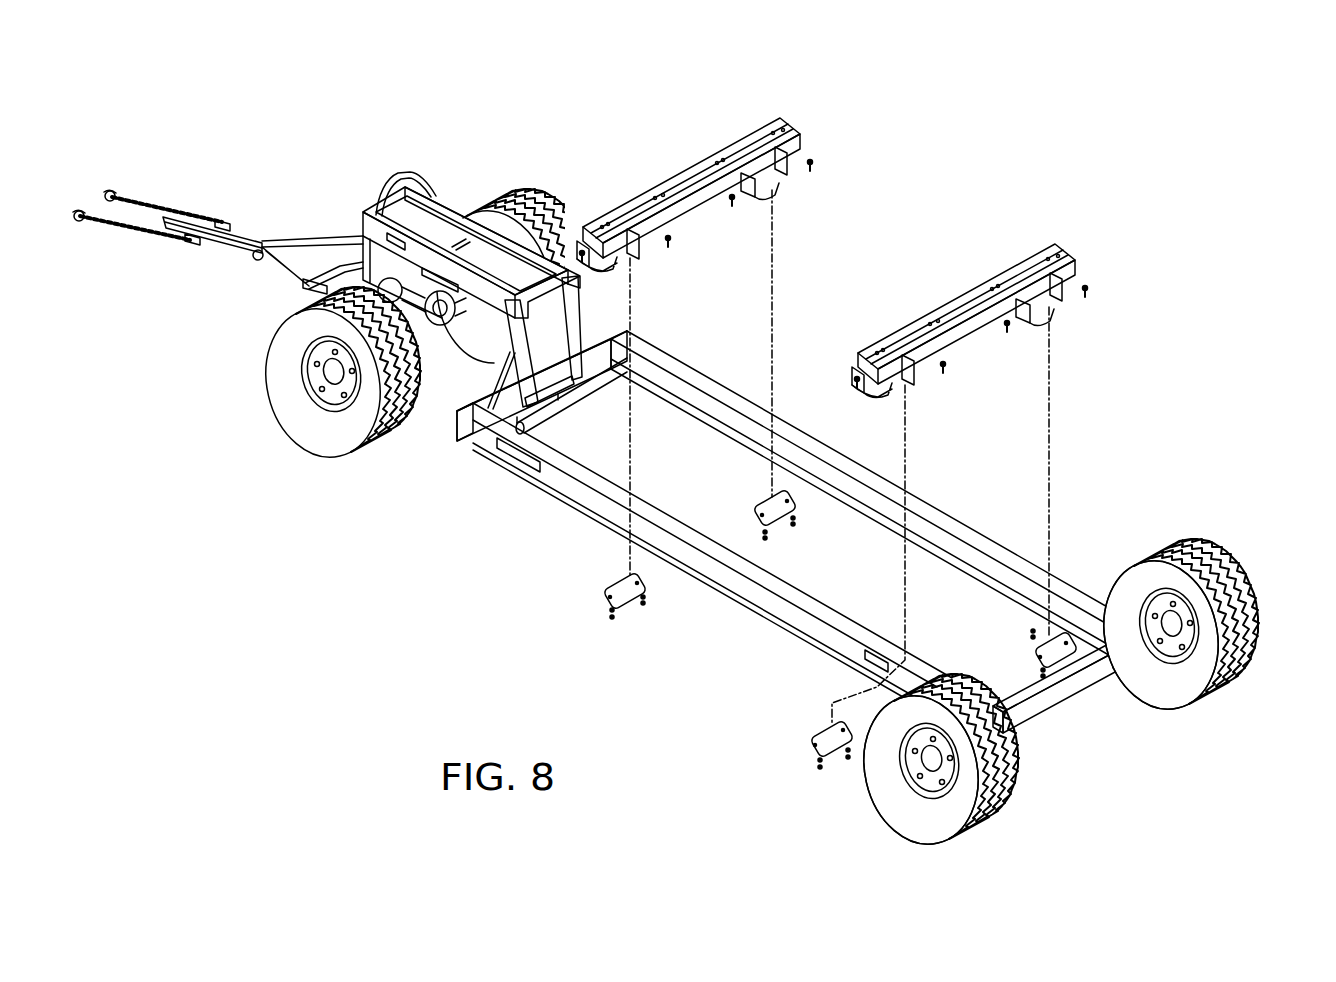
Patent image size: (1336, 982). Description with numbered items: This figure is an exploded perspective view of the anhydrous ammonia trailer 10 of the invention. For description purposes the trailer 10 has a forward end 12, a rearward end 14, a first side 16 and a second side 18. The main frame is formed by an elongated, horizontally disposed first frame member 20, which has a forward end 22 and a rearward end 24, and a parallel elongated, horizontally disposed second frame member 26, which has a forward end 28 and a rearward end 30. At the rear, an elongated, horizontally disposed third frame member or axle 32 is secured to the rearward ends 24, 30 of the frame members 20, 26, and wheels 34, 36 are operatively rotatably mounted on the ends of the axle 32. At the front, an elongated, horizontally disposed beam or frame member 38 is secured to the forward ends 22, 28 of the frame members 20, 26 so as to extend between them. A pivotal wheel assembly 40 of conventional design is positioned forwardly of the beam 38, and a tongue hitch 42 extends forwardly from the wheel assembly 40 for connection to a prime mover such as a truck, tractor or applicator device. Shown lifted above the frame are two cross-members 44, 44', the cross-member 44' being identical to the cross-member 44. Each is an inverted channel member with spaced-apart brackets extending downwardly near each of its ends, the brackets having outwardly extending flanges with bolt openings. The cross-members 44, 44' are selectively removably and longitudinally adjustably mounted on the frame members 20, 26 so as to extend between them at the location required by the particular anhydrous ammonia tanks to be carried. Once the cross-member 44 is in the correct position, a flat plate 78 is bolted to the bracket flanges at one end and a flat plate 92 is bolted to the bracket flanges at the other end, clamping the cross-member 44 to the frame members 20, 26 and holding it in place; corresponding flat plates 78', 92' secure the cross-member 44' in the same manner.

The trailer 10 is at (556, 194).
The forward end 12 is at (344, 177).
The rearward end 14 is at (1100, 737).
The first side 16 is at (757, 630).
The second side 18 is at (1067, 522).
The first frame member 20 is at (588, 525).
The forward end of first frame member 22 is at (445, 428).
The rearward end of first frame member 24 is at (1023, 723).
The second frame member 26 is at (987, 524).
The forward end of second frame member 28 is at (628, 328).
The rearward end of second frame member 30 is at (1150, 687).
The third frame member or axle 32 is at (1100, 693).
The wheel 34 is at (925, 812).
The wheel 36 is at (1248, 596).
The beam or frame member 38 is at (595, 383).
The pivotal wheel assembly 40 is at (263, 352).
The tongue hitch 42 is at (258, 232).
The cross-member 44 is at (695, 335).
The cross-member 44' is at (960, 449).
The flat plate 78 is at (563, 616).
The flat plate 78' is at (760, 744).
The flat plate 92 is at (809, 535).
The flat plate 92' is at (1086, 582).